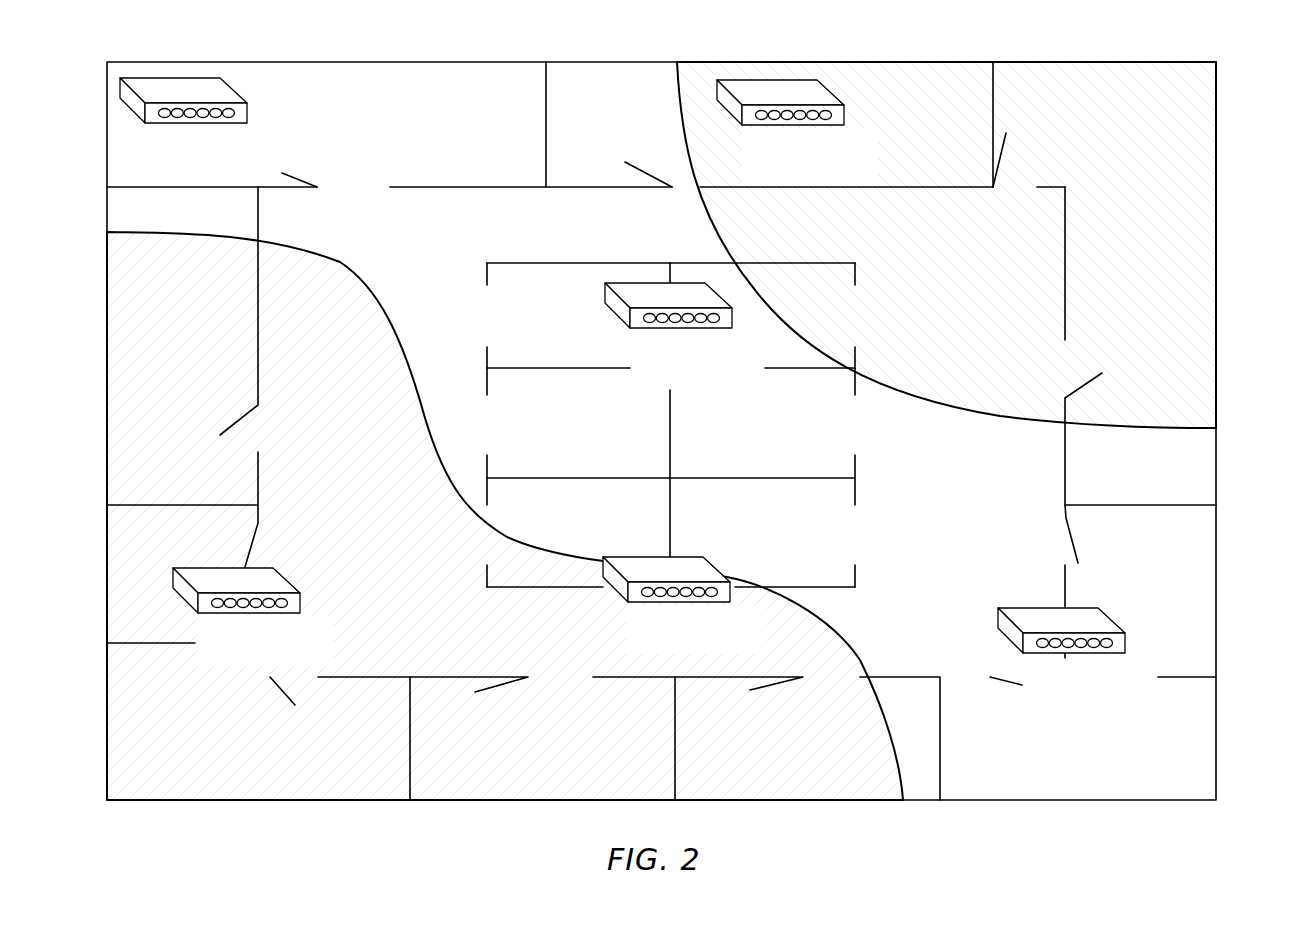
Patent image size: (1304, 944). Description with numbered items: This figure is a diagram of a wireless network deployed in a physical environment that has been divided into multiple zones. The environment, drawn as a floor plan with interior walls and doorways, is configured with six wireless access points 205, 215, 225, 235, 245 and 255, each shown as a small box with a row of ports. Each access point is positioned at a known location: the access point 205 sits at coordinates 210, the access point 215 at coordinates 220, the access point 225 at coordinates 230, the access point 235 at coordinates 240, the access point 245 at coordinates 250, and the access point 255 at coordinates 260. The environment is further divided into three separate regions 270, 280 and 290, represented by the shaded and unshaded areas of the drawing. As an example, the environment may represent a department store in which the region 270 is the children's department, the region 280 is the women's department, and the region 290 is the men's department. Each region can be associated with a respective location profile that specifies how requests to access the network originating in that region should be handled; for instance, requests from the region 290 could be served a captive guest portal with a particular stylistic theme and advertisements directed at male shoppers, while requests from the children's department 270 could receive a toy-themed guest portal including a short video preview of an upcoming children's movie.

The wireless access point 205 is at (183, 114).
The coordinates 210 is at (216, 163).
The wireless access point 215 is at (780, 116).
The coordinates 220 is at (812, 165).
The wireless access point 225 is at (668, 319).
The coordinates 230 is at (671, 425).
The wireless access point 235 is at (236, 603).
The coordinates 240 is at (269, 653).
The wireless access point 245 is at (666, 592).
The coordinates 250 is at (700, 643).
The wireless access point 255 is at (1061, 623).
The coordinates 260 is at (1095, 697).
The region 270 is at (343, 712).
The region 280 is at (937, 603).
The region 290 is at (1138, 170).